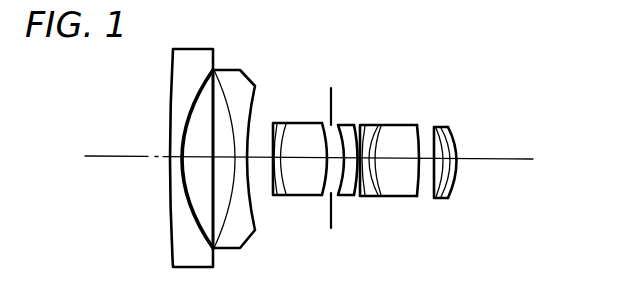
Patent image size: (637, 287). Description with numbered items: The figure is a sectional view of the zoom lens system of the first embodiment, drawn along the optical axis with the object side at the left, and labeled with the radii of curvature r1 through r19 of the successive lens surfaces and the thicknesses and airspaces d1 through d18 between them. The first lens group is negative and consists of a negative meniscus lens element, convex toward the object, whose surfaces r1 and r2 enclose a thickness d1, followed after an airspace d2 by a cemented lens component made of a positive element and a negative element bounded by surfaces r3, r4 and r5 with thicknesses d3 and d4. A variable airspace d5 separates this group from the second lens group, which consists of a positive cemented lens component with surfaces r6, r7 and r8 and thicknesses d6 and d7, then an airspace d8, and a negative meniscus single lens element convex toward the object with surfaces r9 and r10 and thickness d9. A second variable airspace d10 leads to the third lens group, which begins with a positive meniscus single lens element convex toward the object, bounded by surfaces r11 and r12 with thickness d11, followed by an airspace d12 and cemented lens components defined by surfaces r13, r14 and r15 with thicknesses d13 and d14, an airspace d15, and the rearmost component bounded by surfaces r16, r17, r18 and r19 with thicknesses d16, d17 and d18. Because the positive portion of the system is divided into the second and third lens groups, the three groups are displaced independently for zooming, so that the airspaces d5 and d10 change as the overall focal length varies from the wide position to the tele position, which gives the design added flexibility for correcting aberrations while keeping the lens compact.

The radius of curvature of first lens surface r1 is at (172, 247).
The radius of curvature of second lens surface r2 is at (207, 242).
The radius of curvature of third lens surface r3 is at (213, 221).
The radius of curvature of fourth lens surface r4 is at (226, 225).
The radius of curvature of fifth lens surface r5 is at (254, 230).
The radius of curvature of sixth lens surface r6 is at (272, 188).
The radius of curvature of seventh lens surface r7 is at (285, 188).
The radius of curvature of eighth lens surface r8 is at (325, 190).
The radius of curvature of ninth lens surface r9 is at (339, 196).
The radius of curvature of tenth lens surface r10 is at (356, 198).
The radius of curvature of eleventh lens surface r11 is at (364, 188).
The radius of curvature of twelfth lens surface r12 is at (371, 190).
The radius of curvature of thirteenth lens surface r13 is at (378, 188).
The radius of curvature of fourteenth lens surface r14 is at (388, 185).
The radius of curvature of fifteenth lens surface r15 is at (417, 190).
The radius of curvature of sixteenth lens surface r16 is at (433, 198).
The radius of curvature of seventeenth lens surface r17 is at (437, 197).
The radius of curvature of eighteenth lens surface r18 is at (449, 198).
The radius of curvature of nineteenth lens surface r19 is at (455, 180).
The thickness of first lens element d1 is at (172, 156).
The airspace between first and second lens surfaces d2 is at (197, 156).
The thickness of second lens element d3 is at (221, 157).
The thickness of third lens element d4 is at (250, 222).
The airspace between first and second lens groups d5 is at (258, 157).
The thickness of fourth lens element d6 is at (278, 157).
The thickness of fifth lens element d7 is at (301, 157).
The airspace within second lens group d8 is at (328, 157).
The thickness of sixth lens element d9 is at (347, 157).
The airspace between second and third lens groups d10 is at (358, 157).
The thickness of seventh lens element d11 is at (363, 157).
The airspace within third lens group d12 is at (367, 157).
The thickness of eighth lens element d13 is at (373, 157).
The thickness of ninth lens element d14 is at (397, 158).
The airspace within third lens group d15 is at (428, 158).
The thickness of tenth lens element d16 is at (440, 158).
The airspace within third lens group d17 is at (447, 158).
The thickness of eleventh lens element d18 is at (453, 158).